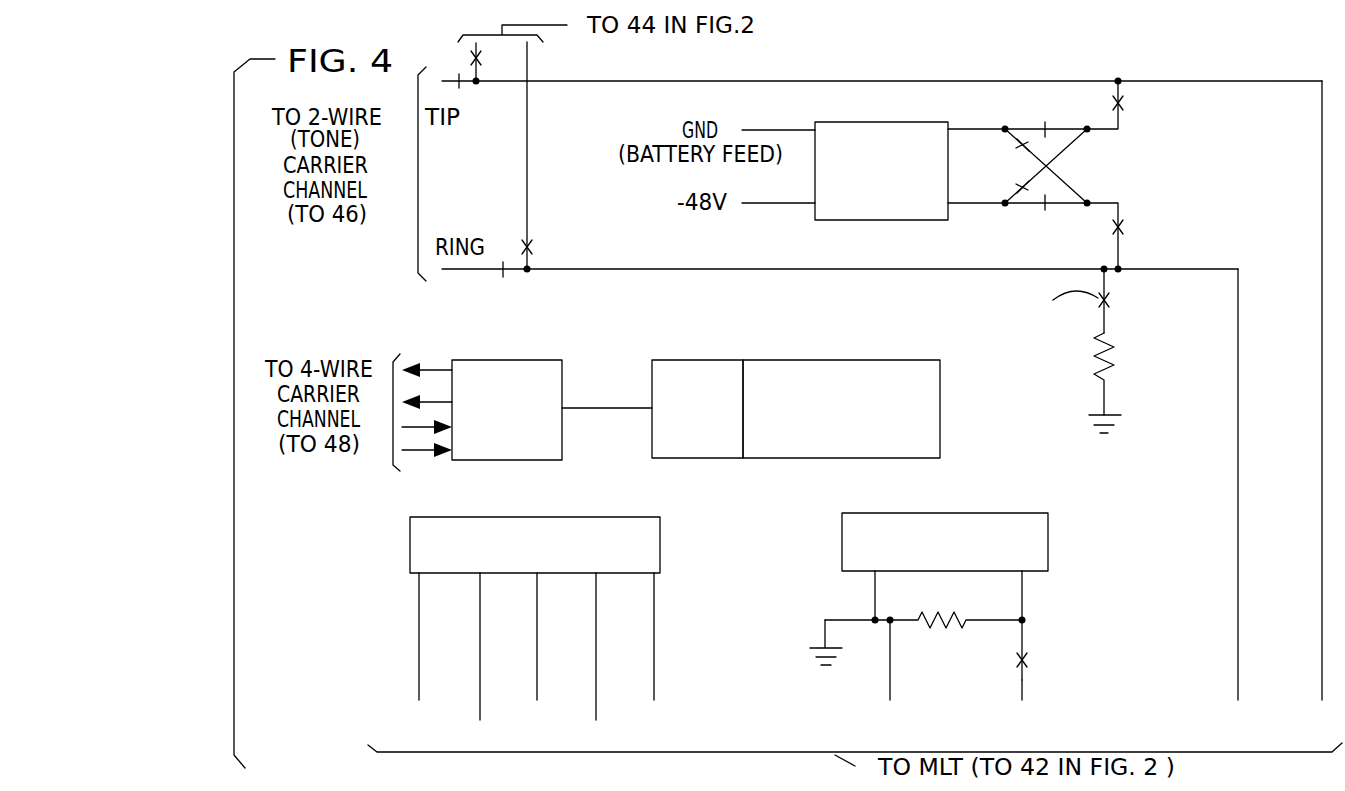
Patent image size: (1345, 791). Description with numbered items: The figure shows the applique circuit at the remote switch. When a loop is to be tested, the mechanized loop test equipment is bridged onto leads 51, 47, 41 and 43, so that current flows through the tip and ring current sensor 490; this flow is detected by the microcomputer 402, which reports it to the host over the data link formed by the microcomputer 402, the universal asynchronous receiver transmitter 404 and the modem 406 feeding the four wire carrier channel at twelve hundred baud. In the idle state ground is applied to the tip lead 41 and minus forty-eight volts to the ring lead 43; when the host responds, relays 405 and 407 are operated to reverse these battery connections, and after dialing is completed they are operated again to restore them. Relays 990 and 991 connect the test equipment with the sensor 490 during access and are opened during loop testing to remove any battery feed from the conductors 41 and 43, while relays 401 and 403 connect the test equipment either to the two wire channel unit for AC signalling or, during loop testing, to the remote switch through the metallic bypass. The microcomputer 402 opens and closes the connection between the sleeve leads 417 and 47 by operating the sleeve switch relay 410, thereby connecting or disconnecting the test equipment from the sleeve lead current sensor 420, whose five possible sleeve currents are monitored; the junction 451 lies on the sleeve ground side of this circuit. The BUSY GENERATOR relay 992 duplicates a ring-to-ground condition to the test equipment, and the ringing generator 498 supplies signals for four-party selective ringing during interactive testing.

The relay 403 is at (459, 88).
The relay 401 is at (503, 277).
The tip and ring current sensor 490 is at (882, 122).
The relay 405 is at (1078, 113).
The relay 407 is at (1023, 243).
The relay 990 is at (1122, 112).
The relay 991 is at (1124, 226).
The BUSY GENERATOR relay 992 is at (1108, 310).
The modem 406 is at (552, 360).
The universal asynchronous receiver transmitter (UART) 404 is at (677, 358).
The microcomputer 402 is at (827, 358).
The ringing generator 498 is at (658, 523).
The sleeve lead current sensor 420 is at (1048, 525).
The sleeve ground junction 451 is at (891, 618).
The sleeve lead 417 is at (1025, 612).
The relay (sleeve switch) 410 is at (1027, 655).
The sleeve lead 47 is at (1025, 685).
The lead 51 is at (893, 677).
The tip lead 41 is at (1320, 443).
The ring lead 43 is at (1240, 527).